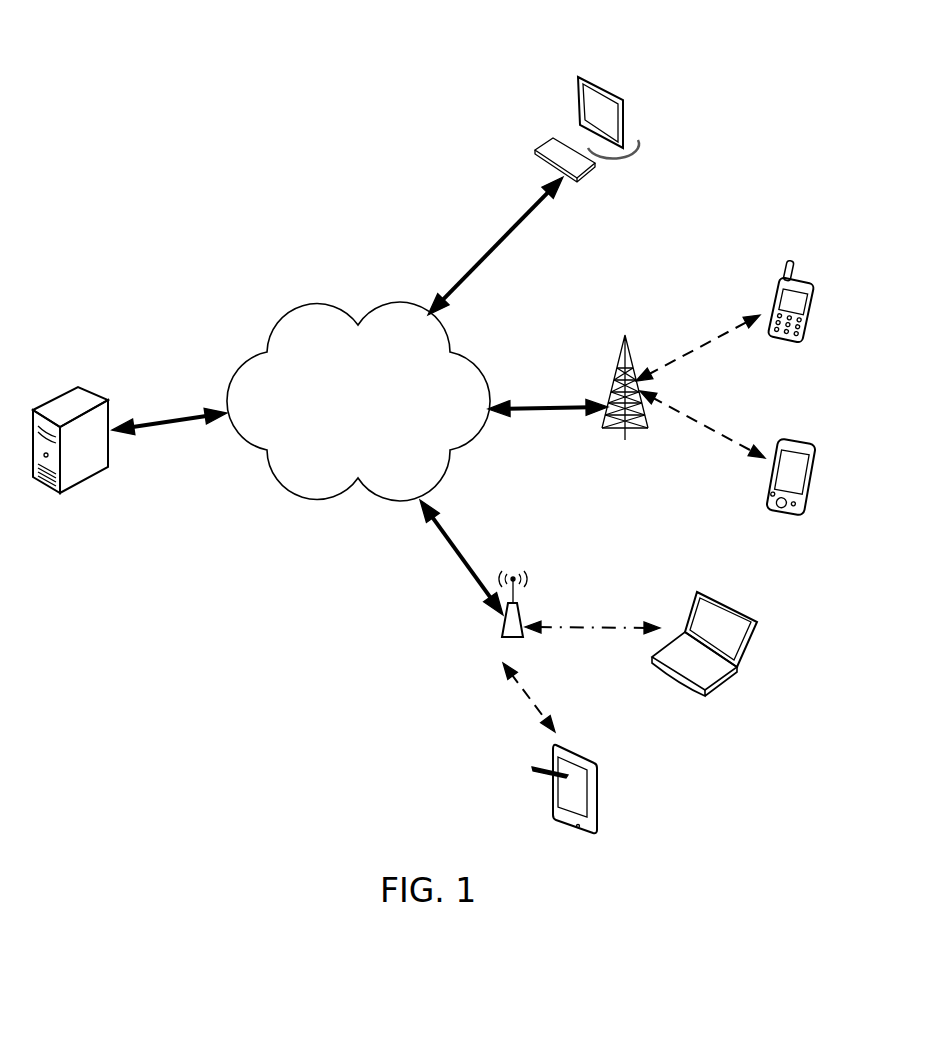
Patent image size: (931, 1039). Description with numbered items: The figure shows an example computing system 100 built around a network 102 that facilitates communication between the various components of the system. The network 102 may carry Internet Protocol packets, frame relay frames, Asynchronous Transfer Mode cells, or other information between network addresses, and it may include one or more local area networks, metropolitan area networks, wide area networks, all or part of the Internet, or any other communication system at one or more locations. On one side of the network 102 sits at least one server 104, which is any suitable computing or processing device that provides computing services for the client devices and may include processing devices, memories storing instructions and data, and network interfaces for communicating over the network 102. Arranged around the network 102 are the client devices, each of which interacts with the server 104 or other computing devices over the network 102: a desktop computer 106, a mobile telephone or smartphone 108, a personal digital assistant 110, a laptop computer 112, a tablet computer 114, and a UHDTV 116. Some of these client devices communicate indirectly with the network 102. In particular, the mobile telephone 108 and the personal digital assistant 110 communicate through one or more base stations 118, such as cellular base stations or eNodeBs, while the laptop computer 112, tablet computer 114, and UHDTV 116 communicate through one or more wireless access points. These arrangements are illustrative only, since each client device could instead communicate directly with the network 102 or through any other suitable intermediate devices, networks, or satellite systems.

The computing system 100 is at (190, 168).
The network 102 is at (277, 317).
The server 104 is at (60, 395).
The desktop computer 106 is at (578, 80).
The mobile telephone or smartphone 108 is at (810, 288).
The personal digital assistant (PDA) 110 is at (807, 450).
The laptop computer 112 is at (755, 630).
The tablet computer 114 is at (597, 782).
The UHDTV 116 is at (645, 427).
The base station 118 is at (523, 612).